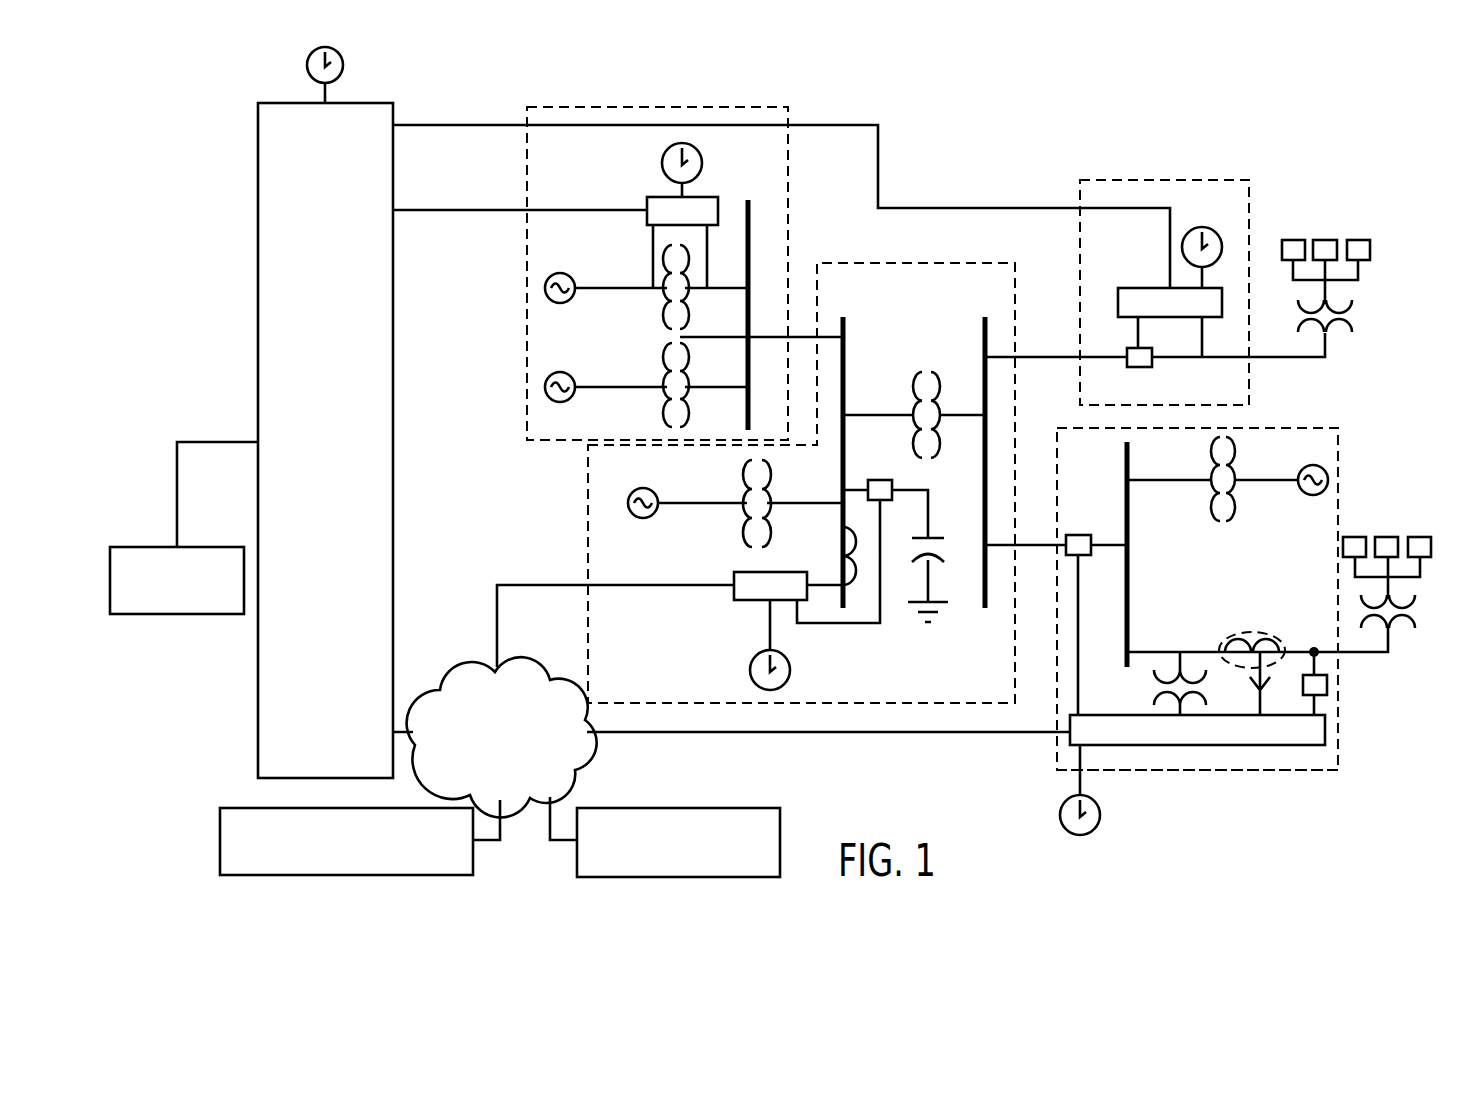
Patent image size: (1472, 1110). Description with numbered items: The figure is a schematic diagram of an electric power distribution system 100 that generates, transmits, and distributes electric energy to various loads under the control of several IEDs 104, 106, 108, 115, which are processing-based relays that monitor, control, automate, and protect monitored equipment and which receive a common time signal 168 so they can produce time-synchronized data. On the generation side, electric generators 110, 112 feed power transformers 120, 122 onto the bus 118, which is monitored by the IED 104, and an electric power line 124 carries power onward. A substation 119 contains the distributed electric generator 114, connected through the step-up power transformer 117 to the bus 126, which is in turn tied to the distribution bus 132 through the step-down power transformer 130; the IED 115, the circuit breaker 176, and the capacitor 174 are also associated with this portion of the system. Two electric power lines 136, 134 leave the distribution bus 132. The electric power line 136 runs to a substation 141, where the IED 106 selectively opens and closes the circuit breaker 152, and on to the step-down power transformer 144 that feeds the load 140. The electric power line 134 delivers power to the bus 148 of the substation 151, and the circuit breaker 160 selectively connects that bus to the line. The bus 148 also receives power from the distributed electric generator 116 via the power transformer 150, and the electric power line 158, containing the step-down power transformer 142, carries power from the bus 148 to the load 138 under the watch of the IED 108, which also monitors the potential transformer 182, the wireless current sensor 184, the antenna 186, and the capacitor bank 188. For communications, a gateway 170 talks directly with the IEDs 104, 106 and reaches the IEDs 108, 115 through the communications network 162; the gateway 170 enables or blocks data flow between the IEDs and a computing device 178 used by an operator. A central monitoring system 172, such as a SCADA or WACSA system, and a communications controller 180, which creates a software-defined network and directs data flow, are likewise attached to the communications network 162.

The electric power distribution system 100 is at (1335, 94).
The IED 104 is at (662, 197).
The IED 106 is at (1135, 288).
The IED 108 is at (1250, 745).
The electric generator 110 is at (562, 273).
The electric generator 112 is at (562, 372).
The electric generator 114 is at (648, 488).
The IED 115 is at (770, 572).
The electric generator 116 is at (1306, 494).
The power transformer 117 is at (745, 537).
The bus 118 is at (753, 204).
The substation 119 is at (588, 533).
The power transformer 120 is at (663, 320).
The power transformer 122 is at (663, 415).
The electric power line 124 is at (798, 335).
The bus 126 is at (843, 343).
The power transformer 130 is at (925, 372).
The distribution bus 132 is at (982, 592).
The electric power line 134 is at (1027, 545).
The electric power line 136 is at (1105, 357).
The load 138 is at (1388, 537).
The load 140 is at (1358, 240).
The substation 141 is at (1100, 180).
The power transformer 142 is at (1398, 613).
The power transformer 144 is at (1352, 318).
The bus 148 is at (1125, 444).
The power transformer 150 is at (1230, 428).
The substation 151 is at (1313, 770).
The circuit breaker 152 is at (1135, 367).
The electric power line 158 is at (1360, 655).
The circuit breaker 160 is at (1085, 535).
The communications network 162 is at (452, 678).
The common time signal 168 is at (343, 66).
The gateway 170 is at (393, 440).
The central monitoring system 172 is at (220, 835).
The capacitor 174 is at (940, 538).
The circuit breaker 176 is at (880, 480).
The computing device 178 is at (178, 614).
The communications controller 180 is at (660, 808).
The potential transformer 182 is at (1147, 688).
The wireless current sensor 184 is at (1250, 633).
The antenna 186 is at (1275, 682).
The capacitor bank 188 is at (1327, 688).